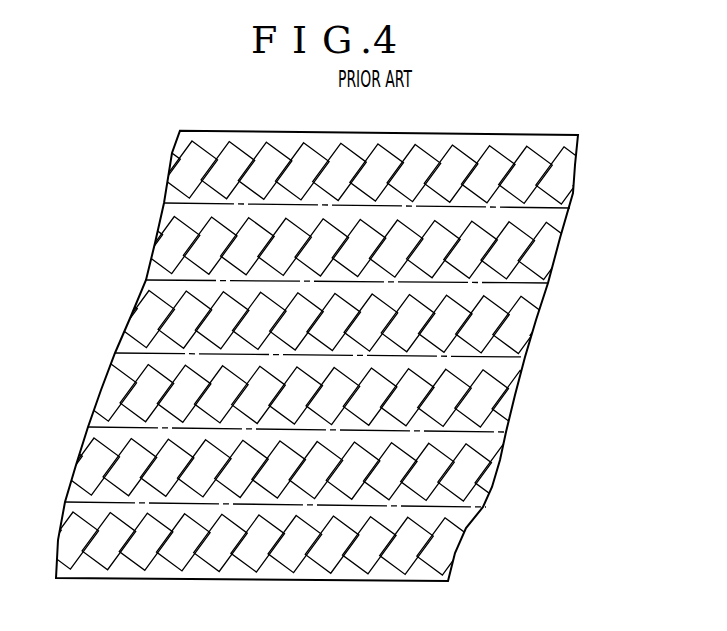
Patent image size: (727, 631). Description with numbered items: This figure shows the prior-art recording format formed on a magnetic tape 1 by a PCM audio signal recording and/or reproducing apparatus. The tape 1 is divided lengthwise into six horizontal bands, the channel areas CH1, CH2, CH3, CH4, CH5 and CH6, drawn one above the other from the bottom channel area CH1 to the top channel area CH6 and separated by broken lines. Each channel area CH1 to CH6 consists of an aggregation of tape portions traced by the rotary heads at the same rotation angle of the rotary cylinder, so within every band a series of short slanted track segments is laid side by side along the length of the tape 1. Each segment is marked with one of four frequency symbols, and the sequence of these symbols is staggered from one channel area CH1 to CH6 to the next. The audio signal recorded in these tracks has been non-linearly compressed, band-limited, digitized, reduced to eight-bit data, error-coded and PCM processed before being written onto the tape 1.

The magnetic tape 1 is at (252, 130).
The channel area CH1 is at (258, 543).
The channel area CH2 is at (289, 469).
The channel area CH3 is at (305, 395).
The channel area CH4 is at (337, 321).
The channel area CH5 is at (361, 247).
The channel area CH6 is at (377, 172).